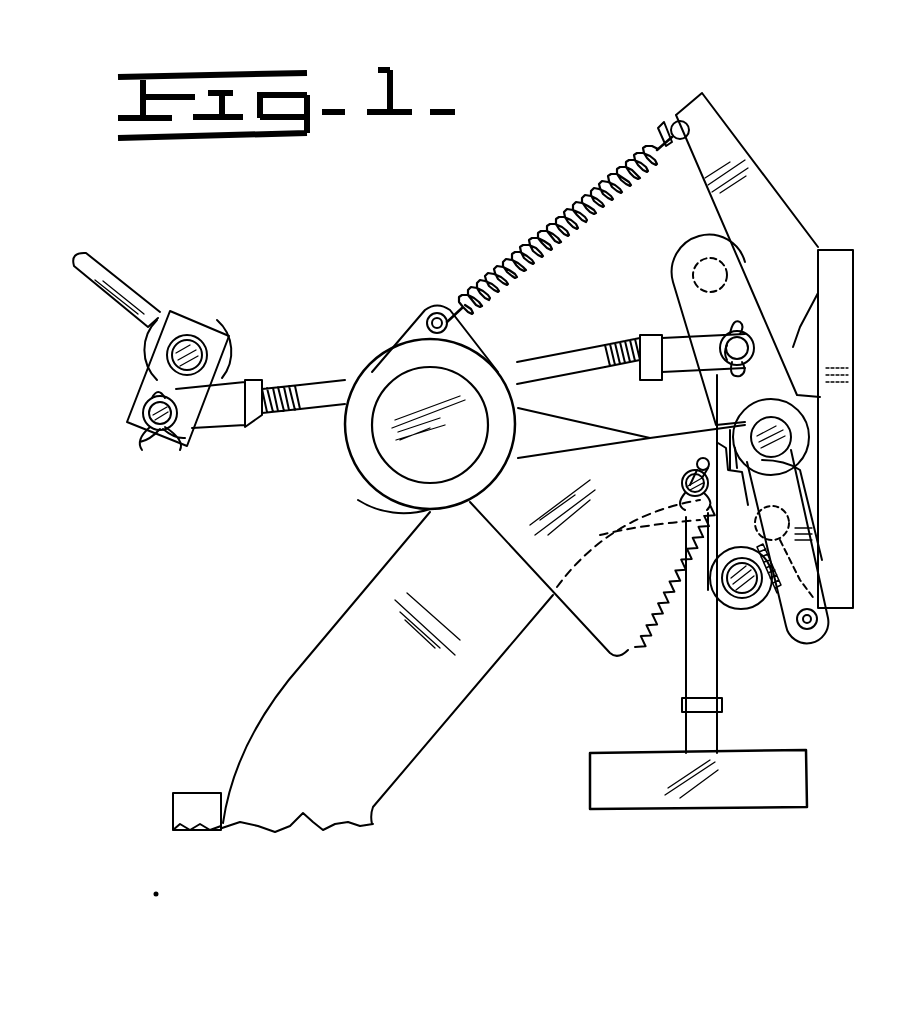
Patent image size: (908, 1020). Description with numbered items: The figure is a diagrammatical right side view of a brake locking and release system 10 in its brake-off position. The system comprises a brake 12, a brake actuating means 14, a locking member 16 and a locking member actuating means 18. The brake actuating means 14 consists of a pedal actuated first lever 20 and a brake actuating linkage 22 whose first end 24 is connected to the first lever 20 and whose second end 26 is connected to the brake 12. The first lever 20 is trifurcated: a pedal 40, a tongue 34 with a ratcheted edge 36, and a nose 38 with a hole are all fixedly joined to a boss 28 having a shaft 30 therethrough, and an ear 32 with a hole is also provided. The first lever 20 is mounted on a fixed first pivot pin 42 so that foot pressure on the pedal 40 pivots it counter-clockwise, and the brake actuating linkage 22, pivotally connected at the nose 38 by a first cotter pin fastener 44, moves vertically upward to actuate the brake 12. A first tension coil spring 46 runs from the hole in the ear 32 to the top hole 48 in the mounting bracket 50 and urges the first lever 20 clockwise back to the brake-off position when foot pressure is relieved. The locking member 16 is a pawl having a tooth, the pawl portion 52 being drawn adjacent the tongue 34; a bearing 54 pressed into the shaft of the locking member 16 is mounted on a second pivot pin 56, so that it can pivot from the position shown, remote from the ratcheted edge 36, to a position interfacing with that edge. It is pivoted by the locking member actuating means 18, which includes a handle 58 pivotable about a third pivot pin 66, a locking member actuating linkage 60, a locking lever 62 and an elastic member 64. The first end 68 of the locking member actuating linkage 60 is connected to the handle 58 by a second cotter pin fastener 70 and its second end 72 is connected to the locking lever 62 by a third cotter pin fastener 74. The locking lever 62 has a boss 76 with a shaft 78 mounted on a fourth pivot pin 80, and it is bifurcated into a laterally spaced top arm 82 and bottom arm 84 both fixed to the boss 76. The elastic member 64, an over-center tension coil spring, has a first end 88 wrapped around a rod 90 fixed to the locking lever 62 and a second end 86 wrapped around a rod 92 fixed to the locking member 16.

The brake locking and release system 10 is at (403, 228).
The brake 12 is at (782, 797).
The brake actuating means 14 is at (625, 697).
The locking member 16 is at (736, 607).
The locking member actuating means 18 is at (670, 312).
The first lever 20 is at (300, 663).
The brake actuating linkage 22 is at (718, 732).
The first end 24 is at (683, 488).
The second end 26 is at (690, 742).
The boss 28 is at (363, 372).
The shaft 30 is at (390, 490).
The ear 32 is at (432, 308).
The tongue 34 is at (572, 628).
The ratcheted edge 36 is at (624, 648).
The nose 38 is at (720, 442).
The pedal 40 is at (202, 790).
The first pivot pin 42 is at (372, 465).
The first cotter pin fastener 44 is at (696, 466).
The first tension coil spring 46 is at (552, 222).
The top hole 48 is at (670, 124).
The mounting bracket 50 is at (838, 250).
The pawl arm 52 is at (802, 492).
The bearing 54 is at (776, 598).
The second pivot pin 56 is at (748, 598).
The handle 58 is at (131, 284).
The locking member actuating linkage 60 is at (277, 382).
The locking lever 62 is at (826, 373).
The elastic member 64 is at (828, 566).
The third pivot pin 66 is at (195, 345).
The first end 68 is at (182, 440).
The second cotter pin fastener 70 is at (148, 400).
The second end 72 is at (790, 318).
The third cotter pin fastener 74 is at (760, 348).
The boss 76 is at (807, 424).
The shaft 78 is at (805, 447).
The fourth pivot pin 80 is at (775, 437).
The top arm 82 is at (740, 270).
The bottom arm 84 is at (808, 512).
The second end 86 is at (815, 540).
The first end 88 is at (826, 620).
The rod 90 is at (824, 632).
The rod 92 is at (705, 528).